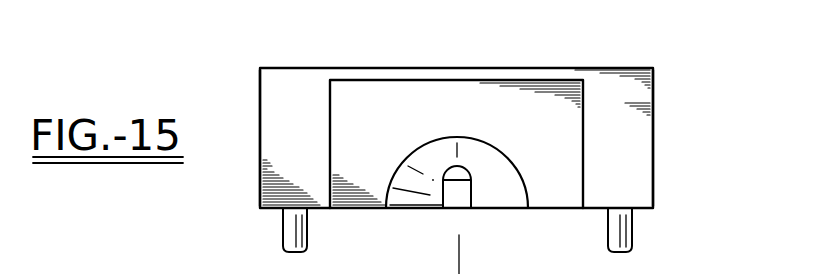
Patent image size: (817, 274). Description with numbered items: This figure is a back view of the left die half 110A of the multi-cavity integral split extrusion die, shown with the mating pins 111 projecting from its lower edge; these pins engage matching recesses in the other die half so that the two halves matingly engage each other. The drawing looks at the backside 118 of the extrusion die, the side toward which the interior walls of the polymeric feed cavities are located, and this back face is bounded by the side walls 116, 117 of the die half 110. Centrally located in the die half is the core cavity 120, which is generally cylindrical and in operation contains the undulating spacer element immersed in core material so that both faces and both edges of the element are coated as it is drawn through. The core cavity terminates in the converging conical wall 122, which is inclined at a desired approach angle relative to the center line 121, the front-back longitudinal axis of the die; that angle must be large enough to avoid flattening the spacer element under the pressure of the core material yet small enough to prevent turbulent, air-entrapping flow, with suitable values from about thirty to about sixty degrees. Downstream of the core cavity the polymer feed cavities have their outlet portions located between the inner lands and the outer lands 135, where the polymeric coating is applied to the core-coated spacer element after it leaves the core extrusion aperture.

The left die half 110A is at (663, 101).
The clip 110 is at (307, 272).
The mating pins 111 is at (283, 238).
The side wall 116 is at (655, 186).
The side wall 117 is at (260, 185).
The backside of the extrusion die 118 is at (574, 159).
The core cavity 120 is at (527, 180).
The center line 121 is at (459, 264).
The converging conical wall 122 is at (412, 197).
The outer lands 135 is at (445, 202).